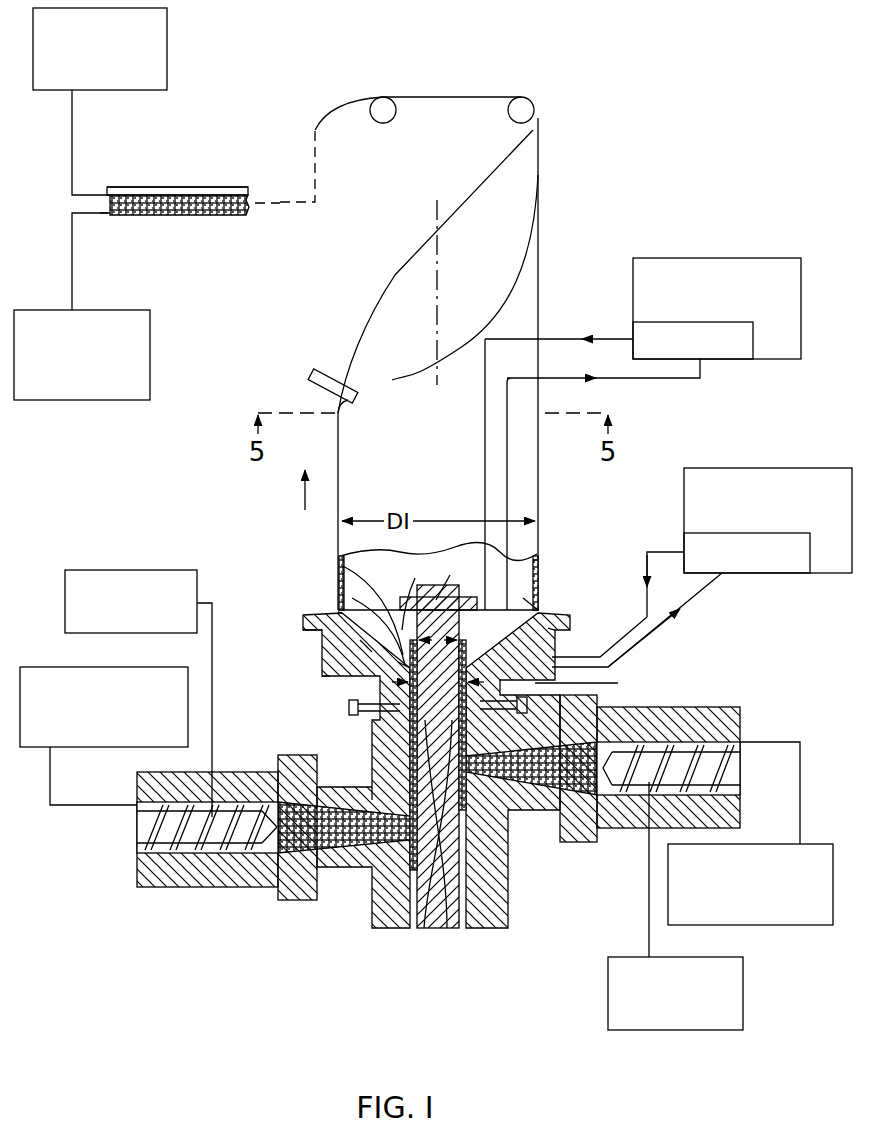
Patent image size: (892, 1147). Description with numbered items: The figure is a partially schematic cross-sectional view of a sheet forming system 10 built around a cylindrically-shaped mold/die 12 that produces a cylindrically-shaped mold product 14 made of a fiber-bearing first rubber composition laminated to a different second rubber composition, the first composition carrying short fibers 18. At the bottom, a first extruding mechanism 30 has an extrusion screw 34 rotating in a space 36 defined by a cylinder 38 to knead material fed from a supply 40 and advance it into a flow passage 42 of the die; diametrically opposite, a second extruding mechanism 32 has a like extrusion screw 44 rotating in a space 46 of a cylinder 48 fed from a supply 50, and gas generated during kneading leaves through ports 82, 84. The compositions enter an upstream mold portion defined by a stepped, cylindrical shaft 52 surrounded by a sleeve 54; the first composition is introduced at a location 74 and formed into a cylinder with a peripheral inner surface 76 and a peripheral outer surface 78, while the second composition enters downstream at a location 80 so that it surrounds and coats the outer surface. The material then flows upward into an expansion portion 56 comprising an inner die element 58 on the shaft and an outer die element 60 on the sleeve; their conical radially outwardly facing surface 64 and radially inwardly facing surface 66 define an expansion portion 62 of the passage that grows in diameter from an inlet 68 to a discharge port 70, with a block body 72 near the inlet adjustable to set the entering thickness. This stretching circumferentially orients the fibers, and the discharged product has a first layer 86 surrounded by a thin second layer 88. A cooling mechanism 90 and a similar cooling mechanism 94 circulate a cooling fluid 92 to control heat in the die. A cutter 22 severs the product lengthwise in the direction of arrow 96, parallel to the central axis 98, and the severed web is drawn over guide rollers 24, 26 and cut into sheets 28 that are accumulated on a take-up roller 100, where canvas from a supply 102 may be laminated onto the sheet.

The sheet forming system 10 is at (608, 165).
The cylindrically-shaped mold/die 12 is at (438, 762).
The cylindrically-shaped mold product 14 is at (538, 297).
The short fibers 18 is at (176, 205).
The cutter 22 is at (335, 372).
The guide roller 24 is at (530, 102).
The guide roller 26 is at (384, 124).
The sheets 28 is at (104, 210).
The first extruding mechanism 30 is at (216, 824).
The second extruding mechanism 32 is at (676, 757).
The extrusion screw 34 is at (172, 838).
The space 36 is at (210, 835).
The cylinder 38 is at (235, 872).
The supply 40 is at (42, 667).
The flow passage 42 is at (470, 870).
The extrusion screw 44 is at (670, 745).
The space 46 is at (600, 792).
The cylinder 48 is at (705, 815).
The supply 50 is at (787, 925).
The stepped, cylindrical shaft 52 is at (497, 928).
The sleeve 54 is at (500, 850).
The expansion portion 56 is at (523, 598).
The inner die element 58 is at (340, 568).
The outer die element 60 is at (322, 626).
The expansion portion of the flow passage 62 is at (322, 670).
The radially outwardly facing surface 64 is at (365, 645).
The radially inwardly facing surface 66 is at (352, 598).
The inlet 68 is at (396, 664).
The discharge port 70 is at (332, 609).
The block body 72 is at (385, 702).
The location 74 is at (410, 895).
The peripheral inner surface 76 is at (428, 880).
The peripheral outer surface 78 is at (374, 790).
The location 80 is at (447, 930).
The port 82 is at (100, 570).
The port 84 is at (695, 1030).
The first layer 86 is at (232, 215).
The second layer 88 is at (147, 187).
The cooling mechanism 90 is at (748, 258).
The cooling fluid 92 is at (740, 360).
The cooling mechanism 94 is at (773, 468).
The arrow 96 is at (307, 497).
The central axis 98 is at (437, 252).
The take-up roller 100 is at (66, 394).
The supply 102 is at (86, 86).